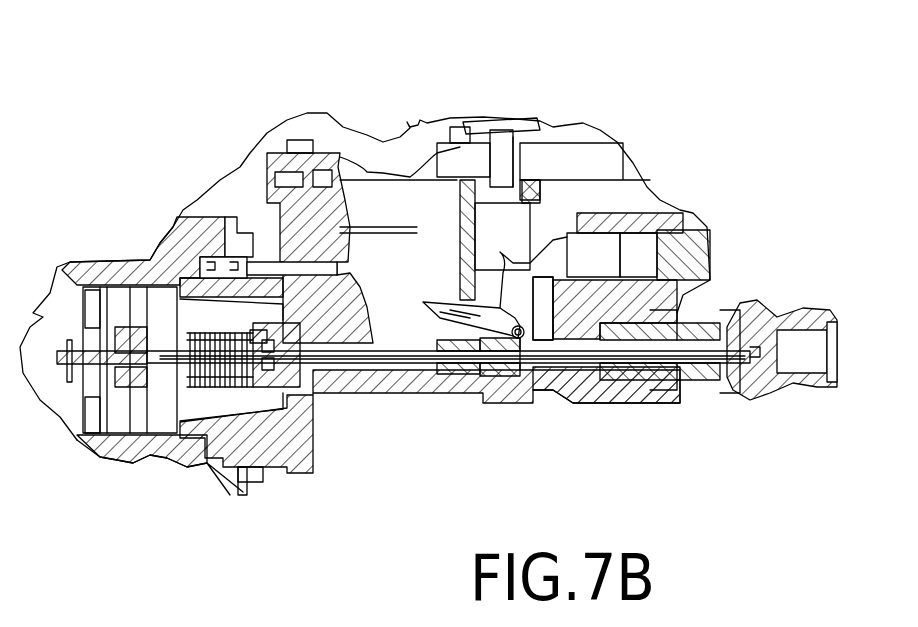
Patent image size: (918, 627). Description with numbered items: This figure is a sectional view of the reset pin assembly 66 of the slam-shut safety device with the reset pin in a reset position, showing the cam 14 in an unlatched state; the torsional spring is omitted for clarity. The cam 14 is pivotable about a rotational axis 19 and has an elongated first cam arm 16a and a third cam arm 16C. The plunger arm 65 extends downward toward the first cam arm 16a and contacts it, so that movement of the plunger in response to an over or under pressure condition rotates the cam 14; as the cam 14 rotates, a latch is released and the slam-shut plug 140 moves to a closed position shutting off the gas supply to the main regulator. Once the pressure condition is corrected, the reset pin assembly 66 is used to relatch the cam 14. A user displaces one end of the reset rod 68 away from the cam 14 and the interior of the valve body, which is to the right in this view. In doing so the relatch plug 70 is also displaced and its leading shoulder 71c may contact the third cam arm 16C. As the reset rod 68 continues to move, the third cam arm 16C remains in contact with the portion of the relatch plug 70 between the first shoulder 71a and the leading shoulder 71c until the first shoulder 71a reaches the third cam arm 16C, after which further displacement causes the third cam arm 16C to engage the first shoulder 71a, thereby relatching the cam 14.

The cam 14 is at (517, 245).
The first cam arm 16a is at (441, 306).
The third cam arm 16C is at (517, 323).
The rotational axis 19 is at (521, 340).
The plunger arm 65 is at (418, 127).
The reset pin assembly 66 is at (802, 300).
The reset rod 68 is at (740, 350).
The relatch plug 70 is at (507, 373).
The first shoulder 71a is at (467, 367).
The leading shoulder 71c is at (520, 373).
The slam-shut plug 140 is at (120, 398).